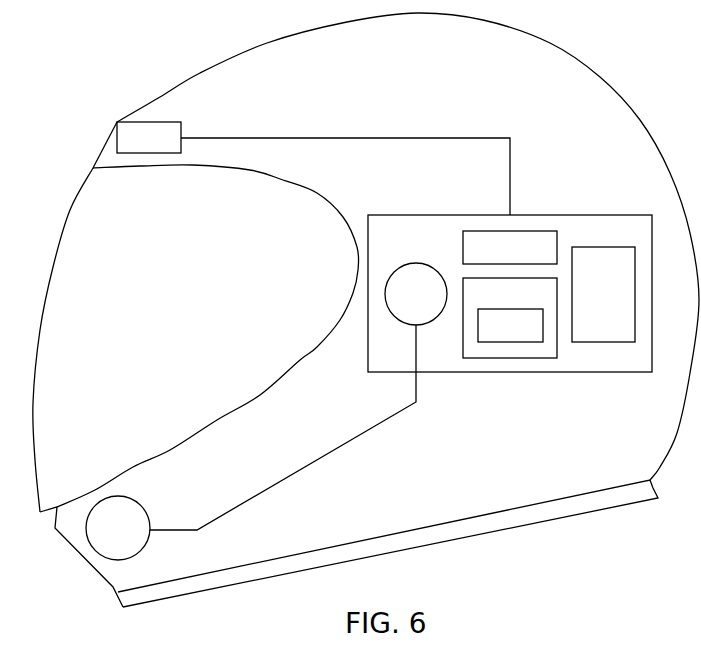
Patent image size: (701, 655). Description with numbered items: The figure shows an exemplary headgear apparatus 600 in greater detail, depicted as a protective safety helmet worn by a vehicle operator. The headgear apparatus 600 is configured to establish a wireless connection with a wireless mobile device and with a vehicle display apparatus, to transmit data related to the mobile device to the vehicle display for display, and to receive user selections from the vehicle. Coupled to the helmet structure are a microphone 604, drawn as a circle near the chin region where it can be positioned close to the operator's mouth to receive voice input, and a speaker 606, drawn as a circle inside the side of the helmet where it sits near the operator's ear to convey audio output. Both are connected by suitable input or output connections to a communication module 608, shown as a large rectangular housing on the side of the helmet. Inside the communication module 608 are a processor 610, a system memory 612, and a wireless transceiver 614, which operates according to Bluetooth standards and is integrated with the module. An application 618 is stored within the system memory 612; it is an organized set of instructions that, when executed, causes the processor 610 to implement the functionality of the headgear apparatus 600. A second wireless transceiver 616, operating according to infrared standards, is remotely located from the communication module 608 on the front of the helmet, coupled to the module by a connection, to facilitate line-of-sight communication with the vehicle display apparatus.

The headgear apparatus 600 is at (163, 56).
The microphone 604 is at (143, 512).
The speaker 606 is at (397, 263).
The communication module 608 is at (602, 215).
The processor 610 is at (481, 231).
The system memory 612 is at (487, 358).
The wireless transceiver 614 is at (628, 247).
The wireless transceiver 616 is at (172, 122).
The application 618 is at (525, 342).